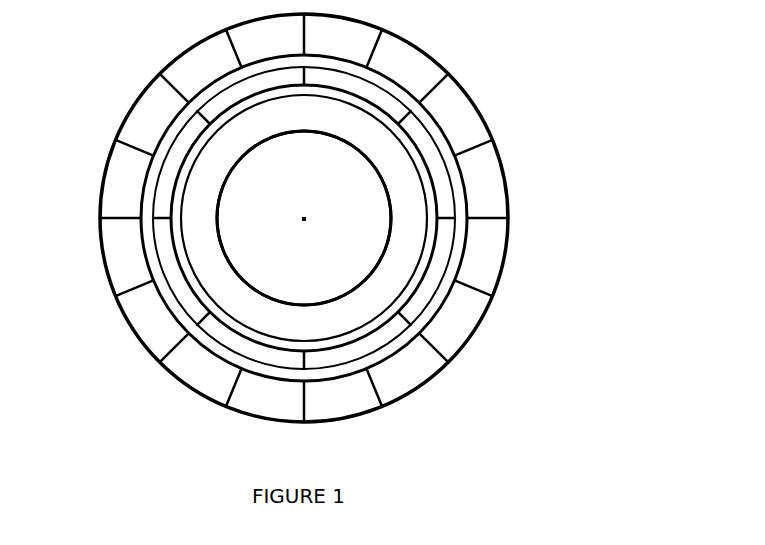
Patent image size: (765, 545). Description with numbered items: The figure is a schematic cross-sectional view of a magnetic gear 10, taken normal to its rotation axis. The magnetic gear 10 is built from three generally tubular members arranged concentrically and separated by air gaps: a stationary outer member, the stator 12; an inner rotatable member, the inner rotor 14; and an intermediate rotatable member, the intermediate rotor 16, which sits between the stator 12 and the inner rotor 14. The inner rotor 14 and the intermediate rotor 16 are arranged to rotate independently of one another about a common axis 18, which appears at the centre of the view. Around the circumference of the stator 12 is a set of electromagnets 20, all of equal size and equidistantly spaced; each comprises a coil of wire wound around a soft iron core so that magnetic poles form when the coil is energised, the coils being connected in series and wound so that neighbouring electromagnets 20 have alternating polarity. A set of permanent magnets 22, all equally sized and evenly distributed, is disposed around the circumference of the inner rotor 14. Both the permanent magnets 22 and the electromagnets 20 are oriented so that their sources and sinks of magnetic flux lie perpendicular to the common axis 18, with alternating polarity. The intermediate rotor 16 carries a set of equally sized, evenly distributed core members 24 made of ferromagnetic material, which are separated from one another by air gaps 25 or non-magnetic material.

The magnetic gear 10 is at (333, 218).
The stator 12 is at (507, 187).
The inner rotor 14 is at (382, 248).
The intermediate rotor 16 is at (438, 287).
The common axis 18 is at (300, 223).
The electromagnets 20 is at (185, 375).
The permanent magnets 22 is at (267, 123).
The core members 24 is at (162, 182).
The air gaps 25 is at (197, 110).